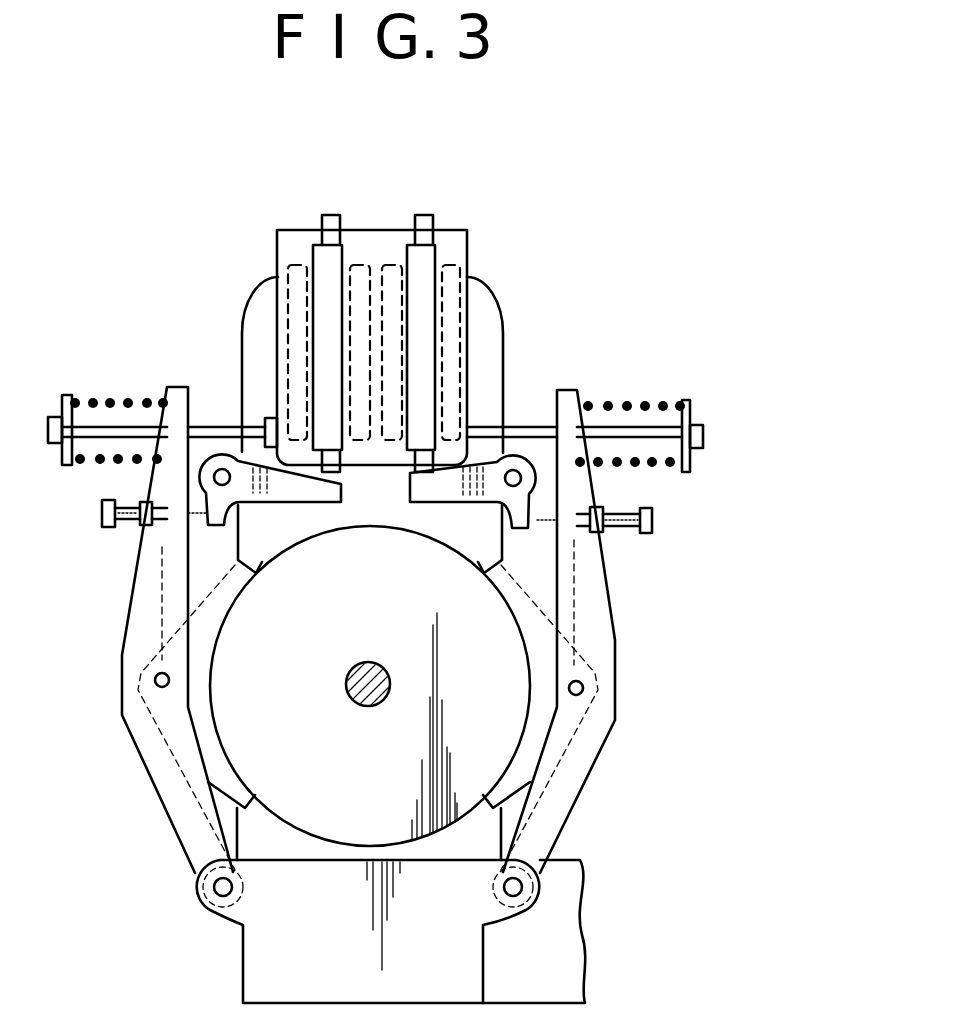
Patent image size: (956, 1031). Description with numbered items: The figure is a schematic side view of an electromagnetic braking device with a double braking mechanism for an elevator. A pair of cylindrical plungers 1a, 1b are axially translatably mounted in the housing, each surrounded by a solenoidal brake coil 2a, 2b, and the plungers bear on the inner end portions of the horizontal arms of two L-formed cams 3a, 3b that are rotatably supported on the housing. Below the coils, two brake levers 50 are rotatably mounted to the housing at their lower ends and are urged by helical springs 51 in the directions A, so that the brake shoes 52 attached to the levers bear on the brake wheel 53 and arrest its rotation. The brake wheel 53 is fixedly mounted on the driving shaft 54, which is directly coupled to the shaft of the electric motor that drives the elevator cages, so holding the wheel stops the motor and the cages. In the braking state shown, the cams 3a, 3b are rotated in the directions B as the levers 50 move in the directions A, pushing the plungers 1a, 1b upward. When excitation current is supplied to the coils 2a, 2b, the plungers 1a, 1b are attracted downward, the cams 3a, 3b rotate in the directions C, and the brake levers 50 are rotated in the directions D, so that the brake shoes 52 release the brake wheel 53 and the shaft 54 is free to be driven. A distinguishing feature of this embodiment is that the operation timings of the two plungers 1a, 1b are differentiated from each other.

The cylindrical plunger 1a is at (347, 252).
The cylindrical plunger 1b is at (437, 252).
The solenoidal brake coil 2a is at (295, 273).
The solenoidal brake coil 2b is at (455, 273).
The L-formed cam 3a is at (313, 492).
The L-formed cam 3b is at (430, 490).
The brake lever 50 is at (180, 388).
The helical spring 51 is at (95, 398).
The brake shoe 52 is at (212, 622).
The brake wheel 53 is at (333, 820).
The driving shaft 54 is at (368, 712).
The direction of brake lever movement under spring force A is at (209, 419).
The direction of cam rotation during braking B is at (245, 516).
The direction of cam rotation during release C is at (292, 520).
The direction of brake lever rotation during release D is at (134, 419).